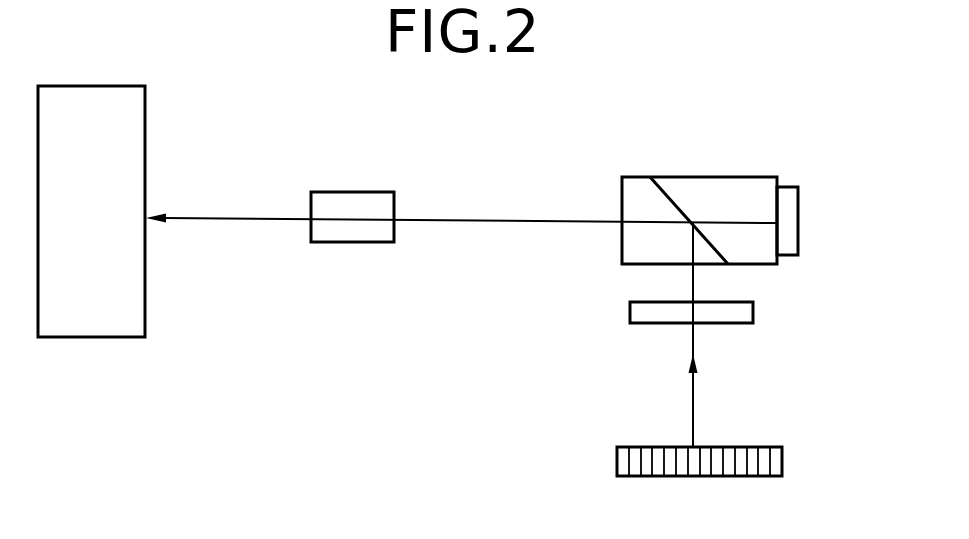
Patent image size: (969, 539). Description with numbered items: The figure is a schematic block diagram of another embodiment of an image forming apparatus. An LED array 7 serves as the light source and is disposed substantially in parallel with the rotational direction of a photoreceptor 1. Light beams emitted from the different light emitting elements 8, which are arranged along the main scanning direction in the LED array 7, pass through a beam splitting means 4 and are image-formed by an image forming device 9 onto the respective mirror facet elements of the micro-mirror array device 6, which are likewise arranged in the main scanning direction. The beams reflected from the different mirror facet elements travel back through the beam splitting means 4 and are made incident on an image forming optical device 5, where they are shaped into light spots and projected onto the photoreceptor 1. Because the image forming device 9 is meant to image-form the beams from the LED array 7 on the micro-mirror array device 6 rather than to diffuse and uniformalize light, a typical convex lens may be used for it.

The photoreceptor 1 is at (96, 338).
The beam splitting means 4 is at (712, 178).
The image forming optical device 5 is at (343, 243).
The micro-mirror array device 6 is at (798, 206).
The LED array 7 is at (722, 473).
The light emitting elements 8 is at (757, 472).
The image forming device 9 is at (753, 311).